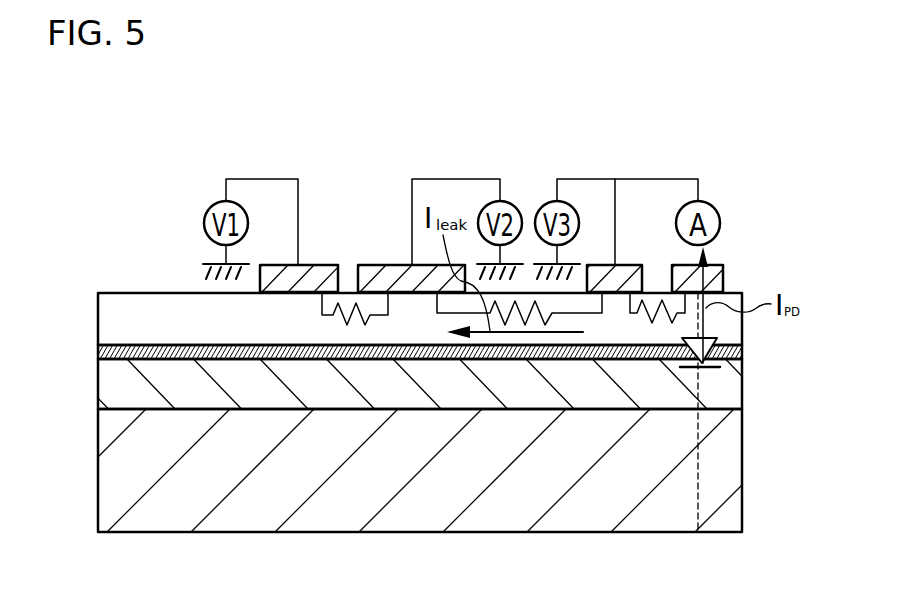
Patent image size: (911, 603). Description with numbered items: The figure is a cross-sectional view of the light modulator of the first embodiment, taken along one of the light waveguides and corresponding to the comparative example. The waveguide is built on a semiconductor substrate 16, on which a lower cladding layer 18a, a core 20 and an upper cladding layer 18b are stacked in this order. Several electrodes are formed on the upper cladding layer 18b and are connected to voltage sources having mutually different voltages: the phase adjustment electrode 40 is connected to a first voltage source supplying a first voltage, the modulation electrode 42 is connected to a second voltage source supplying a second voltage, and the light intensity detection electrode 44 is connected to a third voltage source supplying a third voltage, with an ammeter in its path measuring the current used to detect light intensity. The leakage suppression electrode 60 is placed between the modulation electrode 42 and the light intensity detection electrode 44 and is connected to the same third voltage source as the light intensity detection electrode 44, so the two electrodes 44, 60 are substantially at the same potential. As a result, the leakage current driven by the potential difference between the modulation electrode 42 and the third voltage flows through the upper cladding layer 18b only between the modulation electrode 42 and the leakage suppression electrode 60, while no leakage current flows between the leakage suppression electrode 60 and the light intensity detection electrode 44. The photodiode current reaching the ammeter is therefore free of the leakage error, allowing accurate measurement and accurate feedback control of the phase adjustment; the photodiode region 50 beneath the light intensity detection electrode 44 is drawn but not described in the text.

The semiconductor substrate 16 is at (98, 457).
The lower cladding layer 18a is at (98, 380).
The upper cladding layer 18b is at (98, 298).
The core 20 is at (98, 345).
The phase adjustment electrode 40 is at (310, 265).
The modulation electrode 42 is at (403, 265).
The light intensity detection electrode 44 is at (722, 265).
The photodiode 50 is at (707, 370).
The leakage suppression electrode 60 is at (622, 265).